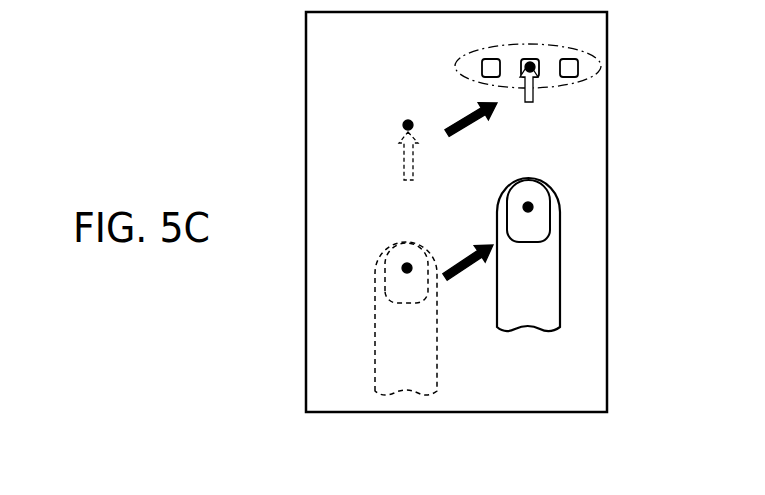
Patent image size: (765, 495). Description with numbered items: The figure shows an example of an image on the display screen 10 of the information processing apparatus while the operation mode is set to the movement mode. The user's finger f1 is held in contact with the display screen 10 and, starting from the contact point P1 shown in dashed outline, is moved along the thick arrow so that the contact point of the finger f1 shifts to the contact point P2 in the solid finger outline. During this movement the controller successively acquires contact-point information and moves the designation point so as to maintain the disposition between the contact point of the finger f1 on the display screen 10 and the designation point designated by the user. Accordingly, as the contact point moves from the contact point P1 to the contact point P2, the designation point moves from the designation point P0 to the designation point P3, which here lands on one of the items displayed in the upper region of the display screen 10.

The display screen 10 is at (607, 185).
The designation point P0 is at (408, 125).
The contact point P1 is at (407, 268).
The contact point P2 is at (528, 207).
The designation point P3 is at (527, 60).
The finger f1 is at (539, 244).